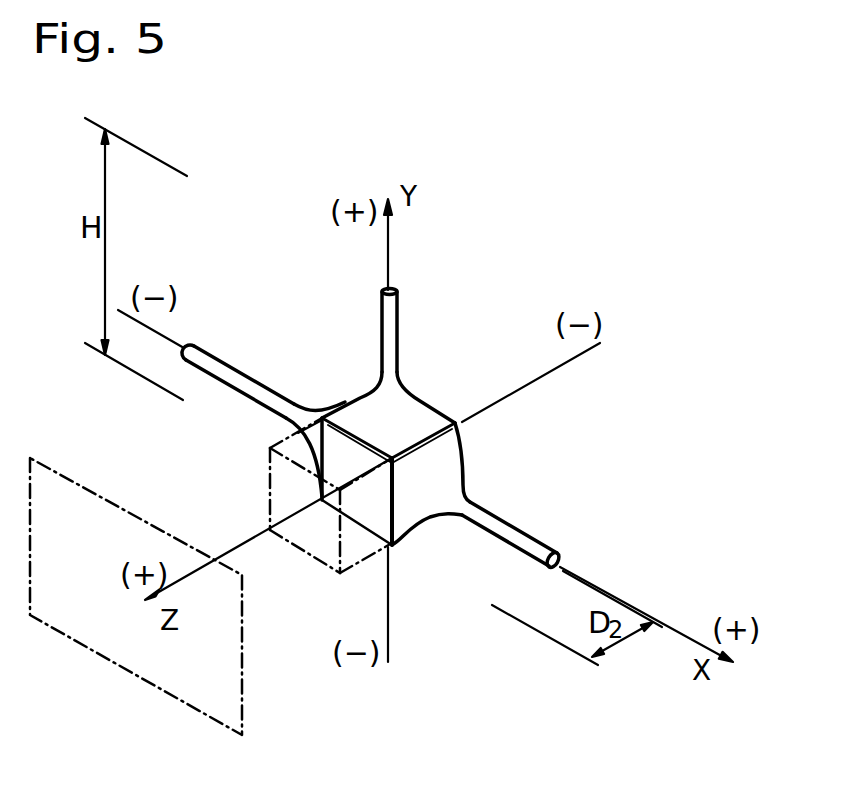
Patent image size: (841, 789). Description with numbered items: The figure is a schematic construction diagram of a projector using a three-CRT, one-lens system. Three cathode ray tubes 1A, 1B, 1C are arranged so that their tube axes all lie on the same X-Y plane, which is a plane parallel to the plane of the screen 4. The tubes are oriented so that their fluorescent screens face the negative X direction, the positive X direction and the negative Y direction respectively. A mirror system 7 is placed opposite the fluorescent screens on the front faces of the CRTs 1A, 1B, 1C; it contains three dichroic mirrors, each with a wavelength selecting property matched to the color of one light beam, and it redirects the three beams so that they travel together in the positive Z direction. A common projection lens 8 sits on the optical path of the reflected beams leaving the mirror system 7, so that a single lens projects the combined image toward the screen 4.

The CRT 1A is at (458, 492).
The CRT 1B is at (239, 376).
The CRT 1C is at (410, 398).
The mirror system 7 is at (394, 547).
The common projection lens 8 is at (302, 555).
The screen 4 is at (242, 683).